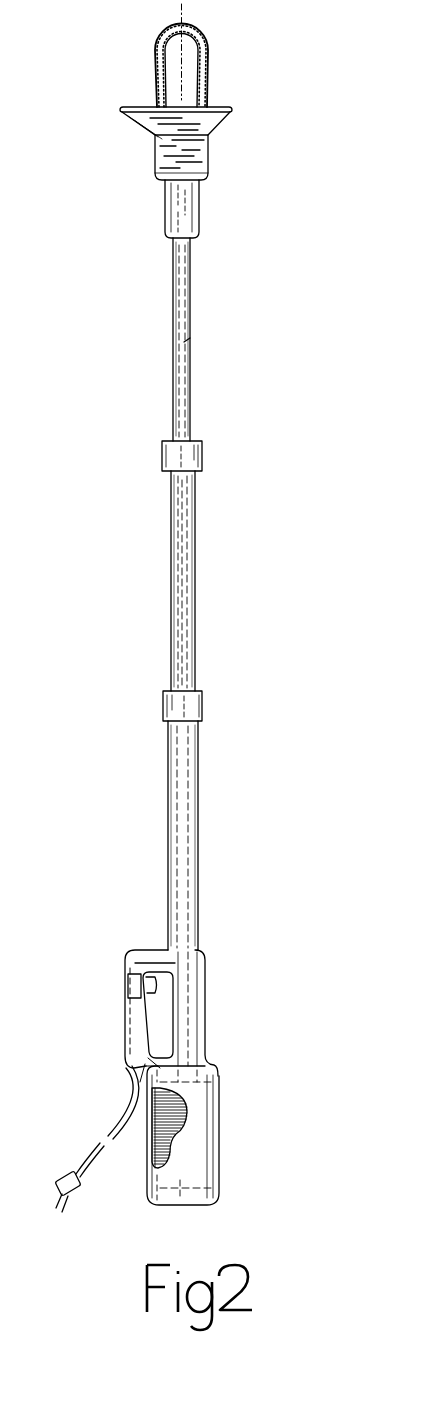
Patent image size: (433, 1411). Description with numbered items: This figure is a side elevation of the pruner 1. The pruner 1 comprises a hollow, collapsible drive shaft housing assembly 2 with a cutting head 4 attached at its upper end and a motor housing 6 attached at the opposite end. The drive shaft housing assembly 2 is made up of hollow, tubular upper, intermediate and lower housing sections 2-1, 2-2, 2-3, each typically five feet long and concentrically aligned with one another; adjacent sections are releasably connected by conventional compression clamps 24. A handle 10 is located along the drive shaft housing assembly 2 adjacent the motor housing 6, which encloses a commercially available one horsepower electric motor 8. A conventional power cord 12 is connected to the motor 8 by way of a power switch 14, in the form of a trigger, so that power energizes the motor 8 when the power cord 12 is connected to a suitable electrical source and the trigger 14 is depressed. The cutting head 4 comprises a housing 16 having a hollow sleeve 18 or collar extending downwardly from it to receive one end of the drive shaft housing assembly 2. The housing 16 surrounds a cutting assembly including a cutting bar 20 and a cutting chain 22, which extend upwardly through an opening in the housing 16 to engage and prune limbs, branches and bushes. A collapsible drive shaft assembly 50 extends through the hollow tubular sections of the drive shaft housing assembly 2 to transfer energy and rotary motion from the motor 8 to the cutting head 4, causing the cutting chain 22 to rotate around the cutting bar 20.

The pruner 1 is at (118, 545).
The drive shaft housing assembly 2 is at (217, 612).
The upper housing section 2-1 is at (175, 302).
The intermediate housing section 2-2 is at (190, 540).
The lower housing section 2-3 is at (170, 826).
The cutting head 4 is at (228, 80).
The motor housing 6 is at (217, 1092).
The motor 8 is at (188, 1143).
The handle 10 is at (123, 1040).
The power cord 12 is at (118, 1116).
The power switch 14 is at (127, 988).
The housing 16 is at (190, 155).
The hollow sleeve 18 is at (175, 210).
The cutting bar 20 is at (183, 58).
The cutting chain 22 is at (203, 32).
The compression clamps 24 is at (200, 457).
The collapsible drive shaft assembly 50 is at (180, 608).